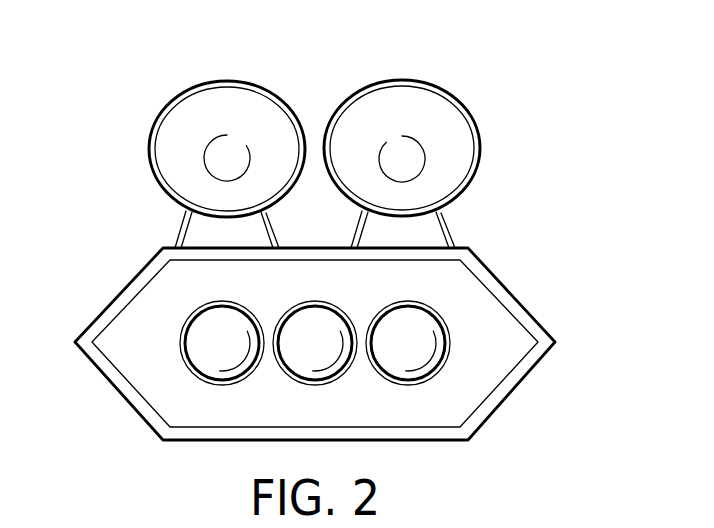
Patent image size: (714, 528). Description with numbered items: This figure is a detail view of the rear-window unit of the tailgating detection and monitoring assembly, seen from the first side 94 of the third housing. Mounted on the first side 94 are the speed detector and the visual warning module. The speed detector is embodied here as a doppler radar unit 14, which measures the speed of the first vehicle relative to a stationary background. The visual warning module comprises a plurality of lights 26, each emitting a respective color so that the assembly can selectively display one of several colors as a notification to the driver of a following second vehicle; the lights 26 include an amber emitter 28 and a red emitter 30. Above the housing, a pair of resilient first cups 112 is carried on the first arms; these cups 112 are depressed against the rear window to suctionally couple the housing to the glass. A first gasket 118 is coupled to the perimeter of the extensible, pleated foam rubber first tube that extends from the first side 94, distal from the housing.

The first cups 112 is at (381, 82).
The plurality of lights 26 is at (192, 350).
The amber emitter 28 is at (182, 362).
The red emitter 30 is at (290, 380).
The doppler radar unit 14 is at (438, 333).
The first side 94 is at (377, 300).
The first gasket 118 is at (359, 344).